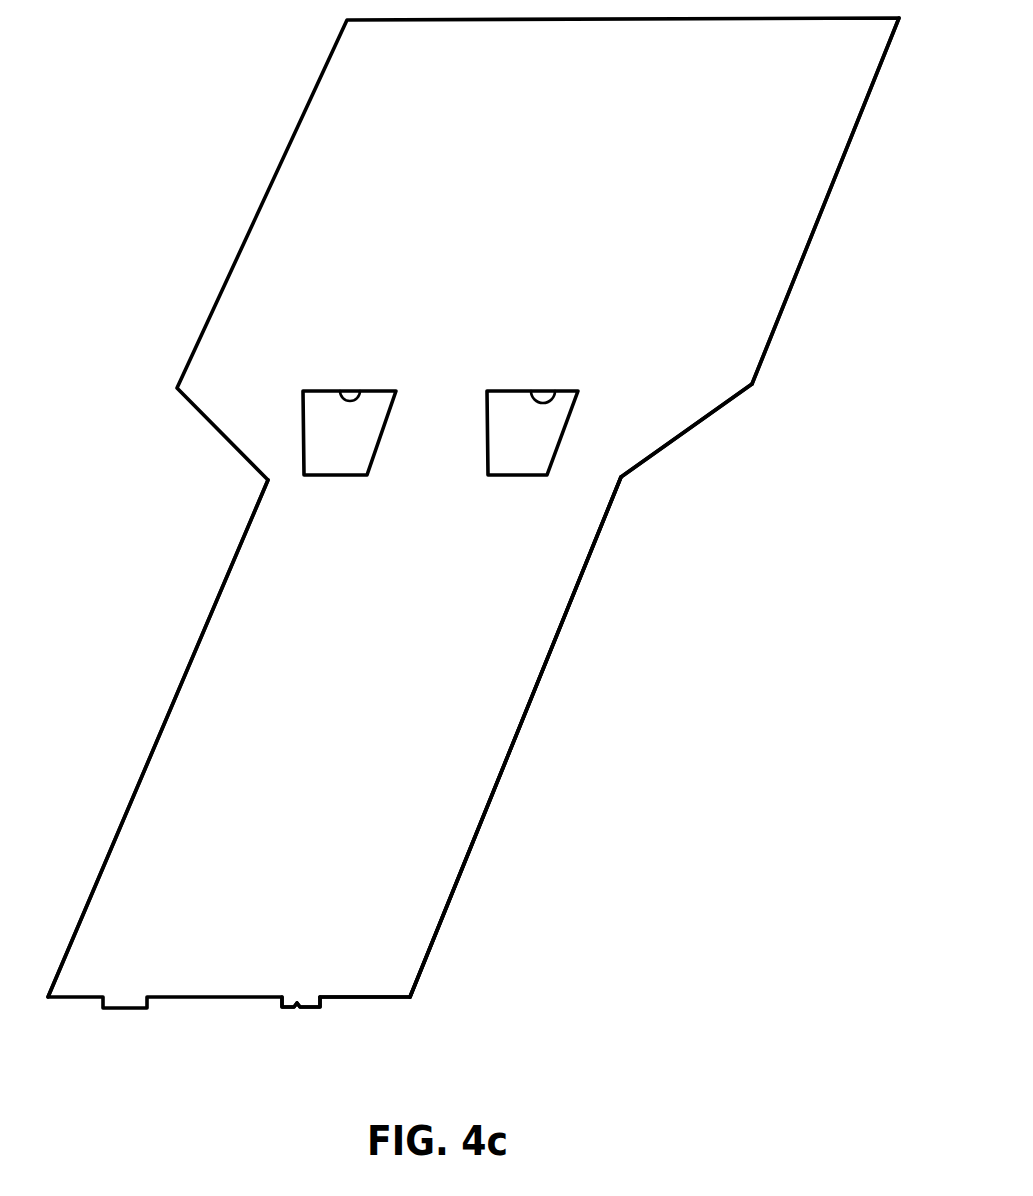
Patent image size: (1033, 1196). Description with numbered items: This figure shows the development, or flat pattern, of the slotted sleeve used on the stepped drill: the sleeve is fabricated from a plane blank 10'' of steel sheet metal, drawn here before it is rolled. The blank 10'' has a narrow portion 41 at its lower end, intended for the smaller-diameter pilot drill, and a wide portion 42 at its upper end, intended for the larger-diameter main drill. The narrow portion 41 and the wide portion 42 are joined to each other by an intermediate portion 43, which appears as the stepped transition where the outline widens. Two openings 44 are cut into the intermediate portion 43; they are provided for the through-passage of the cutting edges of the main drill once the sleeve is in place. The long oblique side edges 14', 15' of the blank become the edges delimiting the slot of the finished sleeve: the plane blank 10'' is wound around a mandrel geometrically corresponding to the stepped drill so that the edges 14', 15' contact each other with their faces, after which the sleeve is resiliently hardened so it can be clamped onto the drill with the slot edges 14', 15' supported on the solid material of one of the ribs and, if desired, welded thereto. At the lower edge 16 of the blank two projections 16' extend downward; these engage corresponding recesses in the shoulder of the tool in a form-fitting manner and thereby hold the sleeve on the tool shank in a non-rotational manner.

The plane blank 10'' is at (473, 513).
The wide portion 42 is at (760, 208).
The intermediate portion 43 is at (622, 419).
The openings 44 is at (363, 392).
The slot edge 14' is at (158, 738).
The slot edge 15' is at (588, 737).
The narrow portion 41 is at (475, 728).
The lower edge 16 is at (434, 1011).
The projections 16' is at (237, 1037).